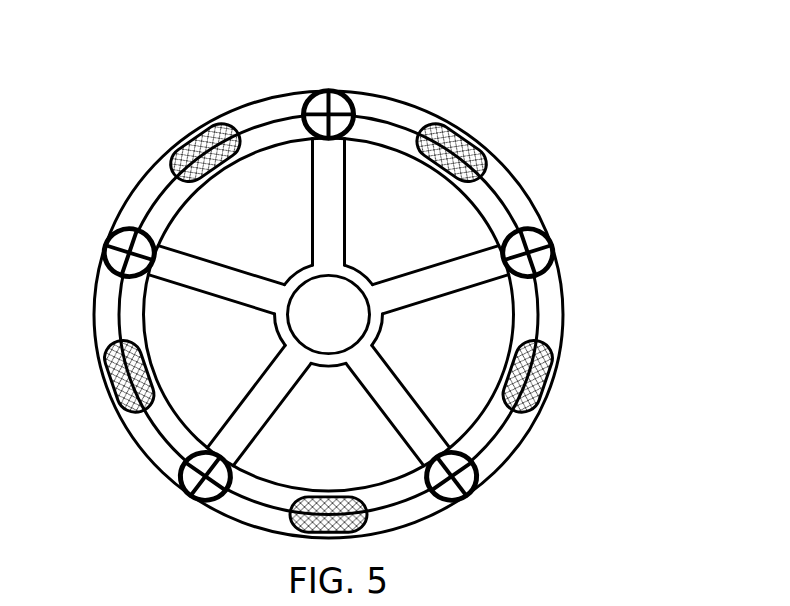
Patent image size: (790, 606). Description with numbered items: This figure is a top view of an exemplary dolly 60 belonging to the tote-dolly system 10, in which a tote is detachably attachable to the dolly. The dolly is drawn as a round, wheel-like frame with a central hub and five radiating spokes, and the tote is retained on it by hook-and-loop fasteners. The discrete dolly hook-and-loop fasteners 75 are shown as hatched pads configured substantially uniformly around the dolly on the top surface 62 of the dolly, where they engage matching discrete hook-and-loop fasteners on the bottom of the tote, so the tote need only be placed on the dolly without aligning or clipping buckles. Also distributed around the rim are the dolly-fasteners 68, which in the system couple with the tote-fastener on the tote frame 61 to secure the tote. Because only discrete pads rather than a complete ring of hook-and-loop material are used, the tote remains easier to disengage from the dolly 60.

The tote-dolly system 10 is at (127, 146).
The dolly 60 is at (508, 202).
The tote frame 61 is at (538, 315).
The top surface of the dolly 62 is at (390, 117).
The dolly-fastener 68 is at (547, 366).
The dolly hook-and-loop fasteners 75 is at (547, 392).